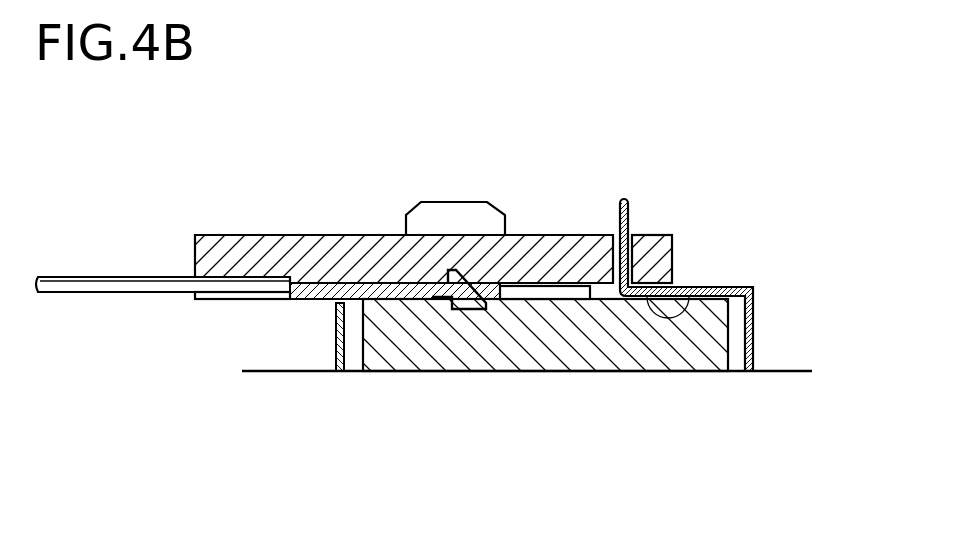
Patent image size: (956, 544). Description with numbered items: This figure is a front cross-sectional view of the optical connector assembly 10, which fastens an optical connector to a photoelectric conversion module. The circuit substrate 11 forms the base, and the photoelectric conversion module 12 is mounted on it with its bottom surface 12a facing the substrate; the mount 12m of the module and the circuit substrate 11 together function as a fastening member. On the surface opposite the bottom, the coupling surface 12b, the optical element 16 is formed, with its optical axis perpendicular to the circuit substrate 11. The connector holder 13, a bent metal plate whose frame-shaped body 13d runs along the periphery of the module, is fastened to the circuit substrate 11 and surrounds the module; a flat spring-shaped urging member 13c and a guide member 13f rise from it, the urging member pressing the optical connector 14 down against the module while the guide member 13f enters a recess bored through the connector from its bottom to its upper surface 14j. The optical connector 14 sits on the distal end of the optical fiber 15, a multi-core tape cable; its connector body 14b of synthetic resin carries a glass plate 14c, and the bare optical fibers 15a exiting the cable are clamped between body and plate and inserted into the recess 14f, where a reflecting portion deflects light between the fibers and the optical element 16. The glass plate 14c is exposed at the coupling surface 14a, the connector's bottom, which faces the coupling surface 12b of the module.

The optical connector assembly 10 is at (580, 234).
The circuit substrate 11 is at (806, 372).
The photoelectric conversion module 12 is at (534, 371).
The bottom surface 12a is at (412, 372).
The coupling surface 12b is at (553, 299).
The mount 12m is at (667, 358).
The connector holder 13 is at (747, 285).
The urging member 13c is at (476, 202).
The frame-shaped body 13d is at (753, 310).
The guide member 13f is at (630, 220).
The optical connector 14 is at (345, 235).
The coupling surface 14a is at (689, 297).
The connector body 14b is at (260, 235).
The glass plate 14c is at (312, 300).
The recess 14f is at (455, 270).
The upper surface 14j is at (230, 235).
The optical fiber 15 is at (106, 276).
The optical fibers 15a is at (327, 282).
The optical element 16 is at (468, 310).